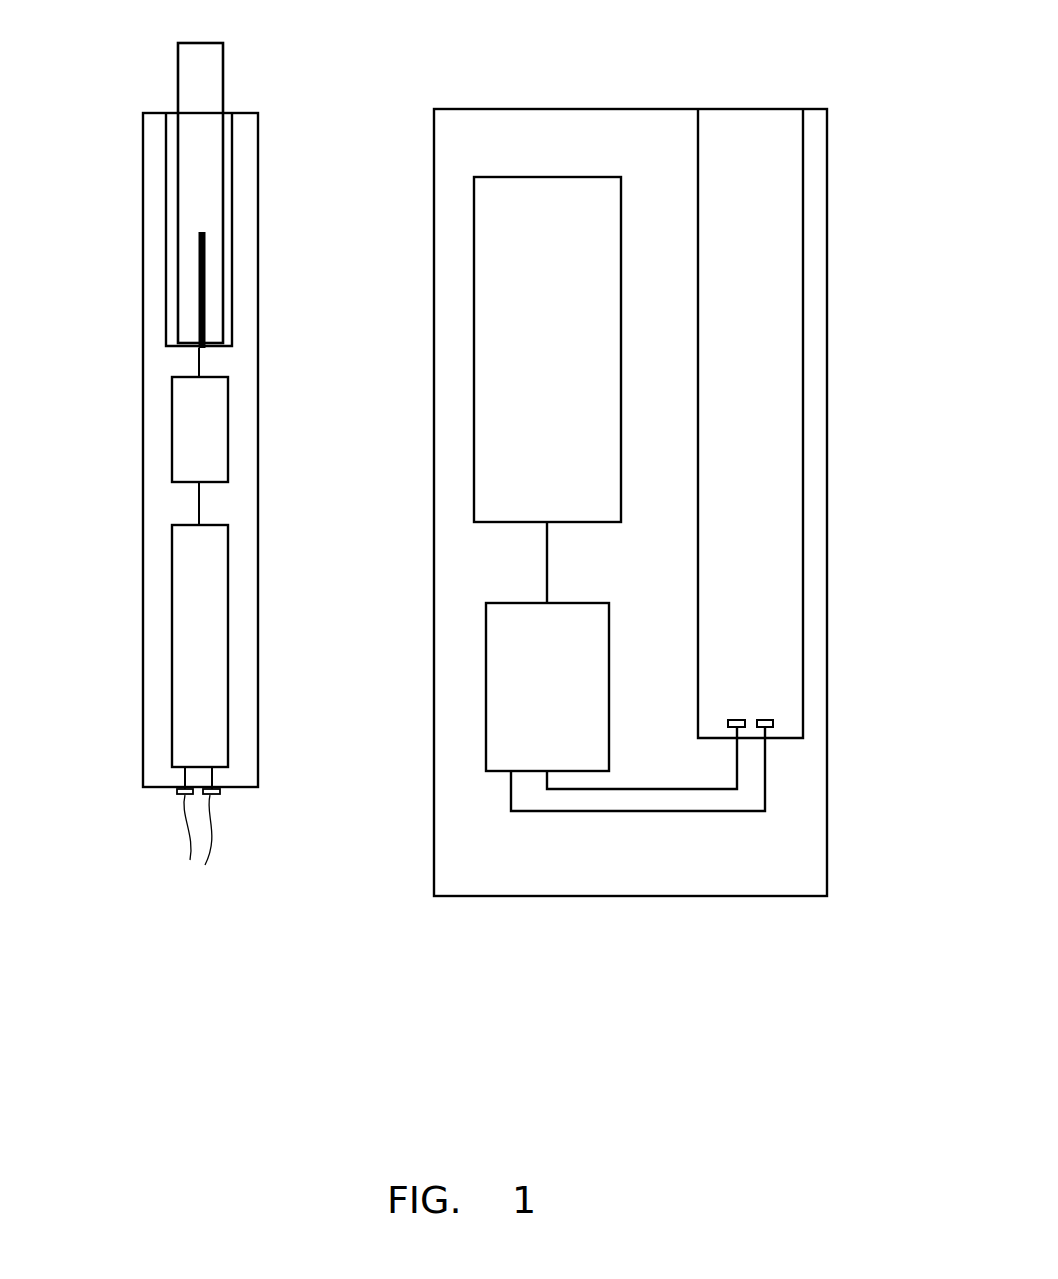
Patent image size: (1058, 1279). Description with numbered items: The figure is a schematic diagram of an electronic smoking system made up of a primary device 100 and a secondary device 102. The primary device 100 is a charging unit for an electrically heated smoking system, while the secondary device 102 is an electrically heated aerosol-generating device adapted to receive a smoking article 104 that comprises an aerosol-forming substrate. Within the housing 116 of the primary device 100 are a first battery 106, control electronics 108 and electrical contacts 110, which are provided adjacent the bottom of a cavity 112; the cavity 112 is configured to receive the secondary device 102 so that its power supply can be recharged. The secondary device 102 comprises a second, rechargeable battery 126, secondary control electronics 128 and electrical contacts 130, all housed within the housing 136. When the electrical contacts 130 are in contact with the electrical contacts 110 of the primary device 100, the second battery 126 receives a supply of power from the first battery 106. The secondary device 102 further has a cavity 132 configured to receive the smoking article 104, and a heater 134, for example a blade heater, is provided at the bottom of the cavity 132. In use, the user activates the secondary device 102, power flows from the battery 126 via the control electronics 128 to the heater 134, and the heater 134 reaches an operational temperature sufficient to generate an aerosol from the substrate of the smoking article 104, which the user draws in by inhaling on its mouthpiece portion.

The primary device 100 is at (634, 575).
The secondary device 102 is at (203, 449).
The smoking article 104 is at (208, 77).
The first battery 106 is at (505, 372).
The control electronics 108 is at (512, 662).
The electrical contacts 110 is at (737, 718).
The cavity 112 is at (762, 388).
The housing 116 is at (828, 810).
The second battery 126 is at (205, 653).
The secondary control electronics 128 is at (200, 436).
The electrical contacts 130 is at (202, 833).
The cavity 132 is at (228, 203).
The heater 134 is at (205, 277).
The housing 136 is at (142, 510).